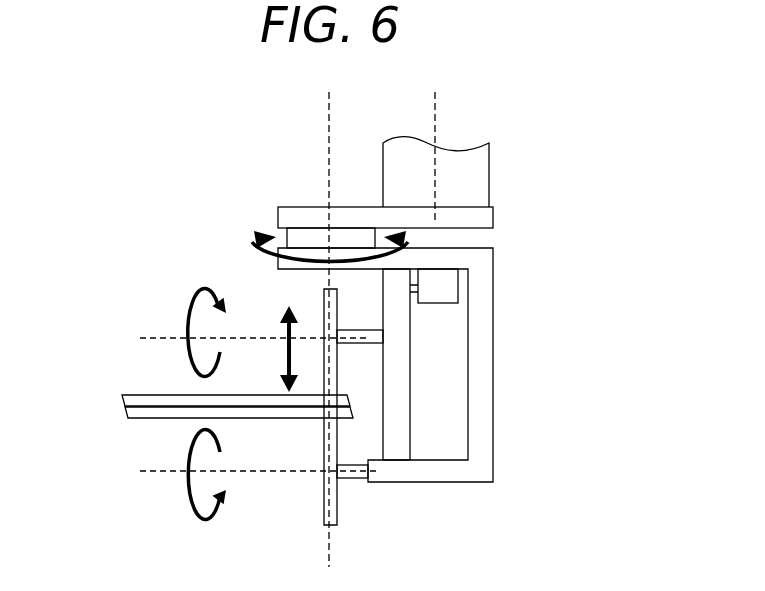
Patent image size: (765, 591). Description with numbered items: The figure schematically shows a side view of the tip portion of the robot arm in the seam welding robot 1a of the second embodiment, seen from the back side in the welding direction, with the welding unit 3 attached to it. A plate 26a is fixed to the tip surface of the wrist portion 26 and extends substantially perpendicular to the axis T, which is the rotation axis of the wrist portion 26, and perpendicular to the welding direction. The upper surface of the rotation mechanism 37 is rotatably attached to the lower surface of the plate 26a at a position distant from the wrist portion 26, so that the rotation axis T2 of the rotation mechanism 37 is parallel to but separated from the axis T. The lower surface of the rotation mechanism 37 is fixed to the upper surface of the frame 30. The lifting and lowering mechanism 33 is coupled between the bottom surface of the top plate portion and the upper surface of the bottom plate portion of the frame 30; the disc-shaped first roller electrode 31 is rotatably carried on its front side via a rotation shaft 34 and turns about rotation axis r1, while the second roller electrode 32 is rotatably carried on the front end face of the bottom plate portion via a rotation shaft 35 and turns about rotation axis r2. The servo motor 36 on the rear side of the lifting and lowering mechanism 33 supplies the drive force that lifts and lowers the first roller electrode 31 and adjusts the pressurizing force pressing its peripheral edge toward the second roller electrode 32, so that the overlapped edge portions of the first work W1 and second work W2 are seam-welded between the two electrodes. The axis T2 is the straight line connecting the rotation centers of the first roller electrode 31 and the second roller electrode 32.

The seam welding robot 1a is at (564, 123).
The welding unit 3 is at (582, 316).
The wrist portion 26 is at (472, 168).
The plate 26a is at (482, 218).
The frame 30 is at (480, 405).
The first roller electrode 31 is at (322, 308).
The second roller electrode 32 is at (324, 500).
The lifting and lowering mechanism 33 is at (395, 447).
The rotation shaft 34 is at (357, 330).
The rotation shaft 35 is at (352, 478).
The servo motor 36 is at (440, 287).
The rotation mechanism 37 is at (297, 238).
The first work W1 is at (123, 400).
The second work W2 is at (128, 415).
The axis T is at (437, 108).
The axis T2 is at (328, 107).
The rotation axis r1 is at (162, 338).
The rotation axis r2 is at (162, 473).